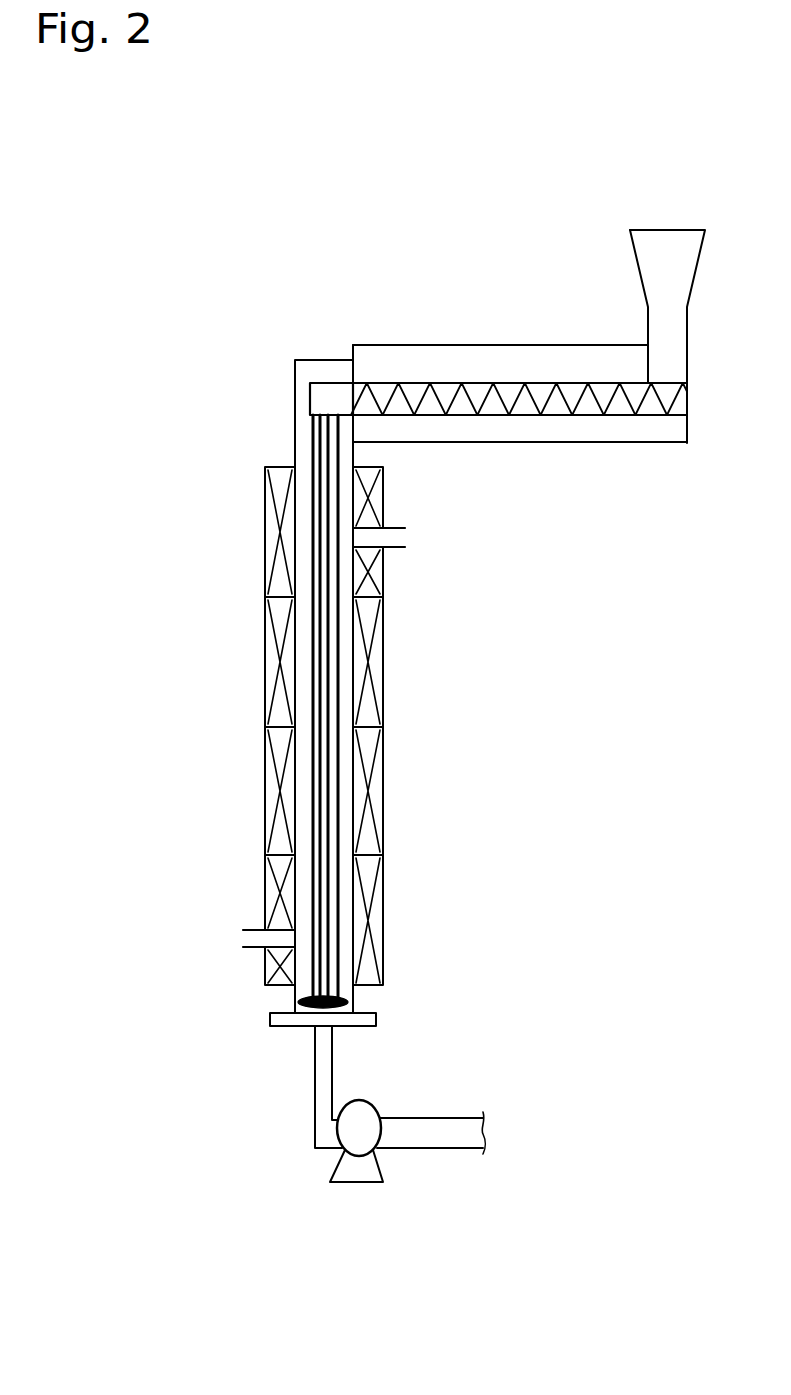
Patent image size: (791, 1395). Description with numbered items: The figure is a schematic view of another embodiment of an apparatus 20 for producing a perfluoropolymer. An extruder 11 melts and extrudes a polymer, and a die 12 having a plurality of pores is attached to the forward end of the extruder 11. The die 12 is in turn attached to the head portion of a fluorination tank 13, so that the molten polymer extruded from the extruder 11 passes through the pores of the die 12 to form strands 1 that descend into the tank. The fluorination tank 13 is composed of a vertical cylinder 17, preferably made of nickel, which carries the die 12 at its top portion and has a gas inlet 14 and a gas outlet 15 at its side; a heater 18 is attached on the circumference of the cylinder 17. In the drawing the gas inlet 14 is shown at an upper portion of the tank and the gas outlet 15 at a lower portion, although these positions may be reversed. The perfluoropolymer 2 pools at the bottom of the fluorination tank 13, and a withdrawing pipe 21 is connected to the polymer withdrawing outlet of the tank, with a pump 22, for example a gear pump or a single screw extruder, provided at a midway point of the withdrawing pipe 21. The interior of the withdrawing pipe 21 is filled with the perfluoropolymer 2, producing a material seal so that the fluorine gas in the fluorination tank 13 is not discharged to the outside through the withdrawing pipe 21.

The apparatus for producing a perfluoropolymer 20 is at (224, 233).
The vertical cylinder 17 is at (294, 420).
The die 12 is at (326, 384).
The extruder 11 is at (497, 345).
The strands 1 is at (341, 890).
The perfluoropolymer 2 is at (345, 1000).
The fluorination tank 13 is at (392, 615).
The heater 18 is at (265, 687).
The gas inlet 14 is at (400, 527).
The gas outlet 15 is at (255, 929).
The withdrawing pipe 21 is at (334, 1063).
The pump 22 is at (365, 1183).